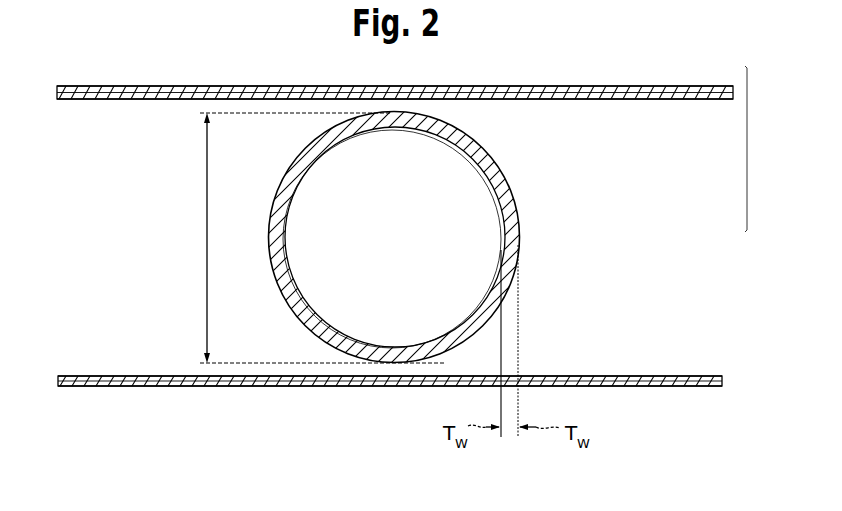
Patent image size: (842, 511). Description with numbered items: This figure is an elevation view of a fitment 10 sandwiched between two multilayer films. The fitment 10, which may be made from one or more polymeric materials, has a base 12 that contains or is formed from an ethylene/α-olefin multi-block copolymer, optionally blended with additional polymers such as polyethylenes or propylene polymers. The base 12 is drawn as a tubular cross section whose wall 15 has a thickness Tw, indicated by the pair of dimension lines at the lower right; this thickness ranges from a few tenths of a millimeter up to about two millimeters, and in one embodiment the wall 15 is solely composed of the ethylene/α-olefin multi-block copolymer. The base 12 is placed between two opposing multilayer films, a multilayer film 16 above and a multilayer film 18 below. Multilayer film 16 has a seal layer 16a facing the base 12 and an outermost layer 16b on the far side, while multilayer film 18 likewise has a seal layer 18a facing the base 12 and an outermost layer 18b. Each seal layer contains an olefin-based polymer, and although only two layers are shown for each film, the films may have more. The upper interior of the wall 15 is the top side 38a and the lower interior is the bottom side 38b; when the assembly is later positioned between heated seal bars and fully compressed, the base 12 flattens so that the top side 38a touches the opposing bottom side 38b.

The fitment 10 is at (391, 237).
The base 12 is at (483, 152).
The wall 15 is at (520, 225).
The multilayer film 16 is at (148, 87).
The seal layer 16a is at (93, 100).
The outermost layer 16b is at (82, 87).
The multilayer film 18 is at (138, 386).
The seal layer 18a is at (97, 386).
The outermost layer 18b is at (95, 377).
The top side of the base wall 38a is at (388, 127).
The bottom side of the base wall 38b is at (392, 343).